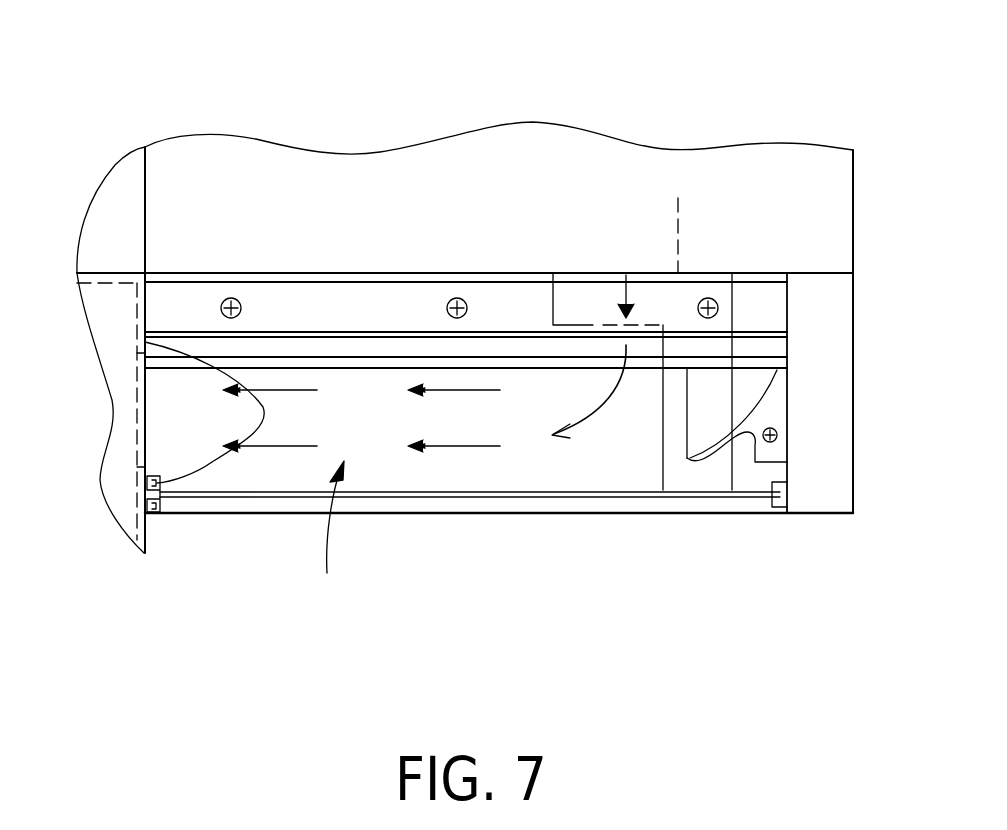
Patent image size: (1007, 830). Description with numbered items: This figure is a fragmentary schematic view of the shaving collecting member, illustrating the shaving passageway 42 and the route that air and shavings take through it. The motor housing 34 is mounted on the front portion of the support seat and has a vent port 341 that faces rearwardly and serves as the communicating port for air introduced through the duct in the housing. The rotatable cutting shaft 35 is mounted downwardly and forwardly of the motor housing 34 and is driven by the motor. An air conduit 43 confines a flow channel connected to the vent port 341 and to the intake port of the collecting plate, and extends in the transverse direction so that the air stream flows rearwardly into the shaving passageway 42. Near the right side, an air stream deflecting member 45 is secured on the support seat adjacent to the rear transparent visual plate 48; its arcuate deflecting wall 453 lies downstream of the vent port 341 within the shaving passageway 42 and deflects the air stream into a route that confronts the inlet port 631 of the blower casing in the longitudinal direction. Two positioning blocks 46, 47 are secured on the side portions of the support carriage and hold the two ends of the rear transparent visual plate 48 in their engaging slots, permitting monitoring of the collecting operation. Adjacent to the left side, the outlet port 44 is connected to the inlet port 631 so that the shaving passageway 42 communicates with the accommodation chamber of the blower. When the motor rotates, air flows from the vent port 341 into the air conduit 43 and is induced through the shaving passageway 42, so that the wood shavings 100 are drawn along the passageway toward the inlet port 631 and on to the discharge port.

The motor housing 34 is at (418, 170).
The vent port 341 is at (565, 273).
The cutting shaft 35 is at (349, 307).
The air conduit 43 is at (730, 310).
The air stream deflecting member 45 is at (773, 405).
The arcuate deflecting wall 453 is at (713, 413).
The rear transparent visual plate 48 is at (580, 492).
The positioning block 46 is at (163, 508).
The positioning block 47 is at (780, 508).
The outlet port 44 is at (180, 420).
The shaving passageway 42 is at (603, 450).
The wood shavings 100 is at (317, 530).
The inlet port 631 is at (140, 446).